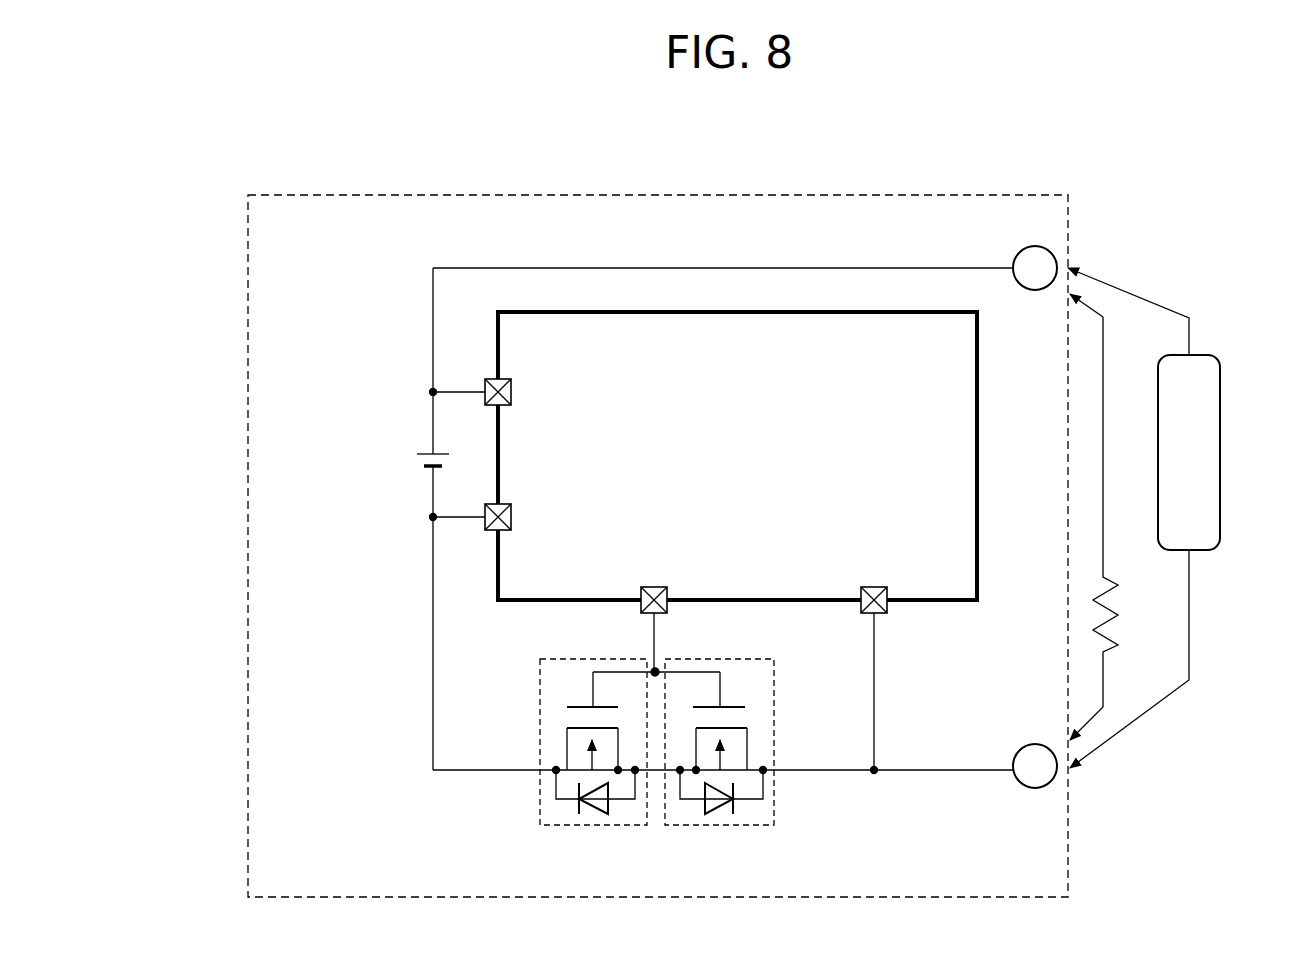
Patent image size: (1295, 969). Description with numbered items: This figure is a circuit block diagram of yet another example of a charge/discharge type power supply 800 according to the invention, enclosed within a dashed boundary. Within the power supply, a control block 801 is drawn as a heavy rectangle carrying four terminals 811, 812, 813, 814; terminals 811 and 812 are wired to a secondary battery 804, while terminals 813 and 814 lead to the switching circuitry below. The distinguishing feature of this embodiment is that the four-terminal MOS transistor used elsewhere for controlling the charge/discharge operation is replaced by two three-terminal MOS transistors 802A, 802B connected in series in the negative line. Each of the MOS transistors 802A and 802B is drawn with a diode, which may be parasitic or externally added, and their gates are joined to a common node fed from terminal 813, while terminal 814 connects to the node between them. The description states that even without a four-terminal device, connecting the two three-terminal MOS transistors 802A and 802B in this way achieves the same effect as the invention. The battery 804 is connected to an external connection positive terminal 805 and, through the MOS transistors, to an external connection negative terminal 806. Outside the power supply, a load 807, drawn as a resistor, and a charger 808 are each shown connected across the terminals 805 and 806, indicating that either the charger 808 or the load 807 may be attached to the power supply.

The battery pack 800 is at (677, 193).
The battery cell 801 is at (680, 312).
The three-terminal MOS transistor 802A is at (592, 810).
The three-terminal MOS transistor 802B is at (720, 810).
The power source 804 is at (417, 463).
The positive terminal 805 is at (1018, 248).
The negative terminal 806 is at (1023, 786).
The load resistor 807 is at (1100, 610).
The charger 808 is at (1220, 442).
The terminal 811 is at (512, 392).
The terminal 812 is at (512, 517).
The terminal 813 is at (655, 588).
The terminal 814 is at (873, 588).